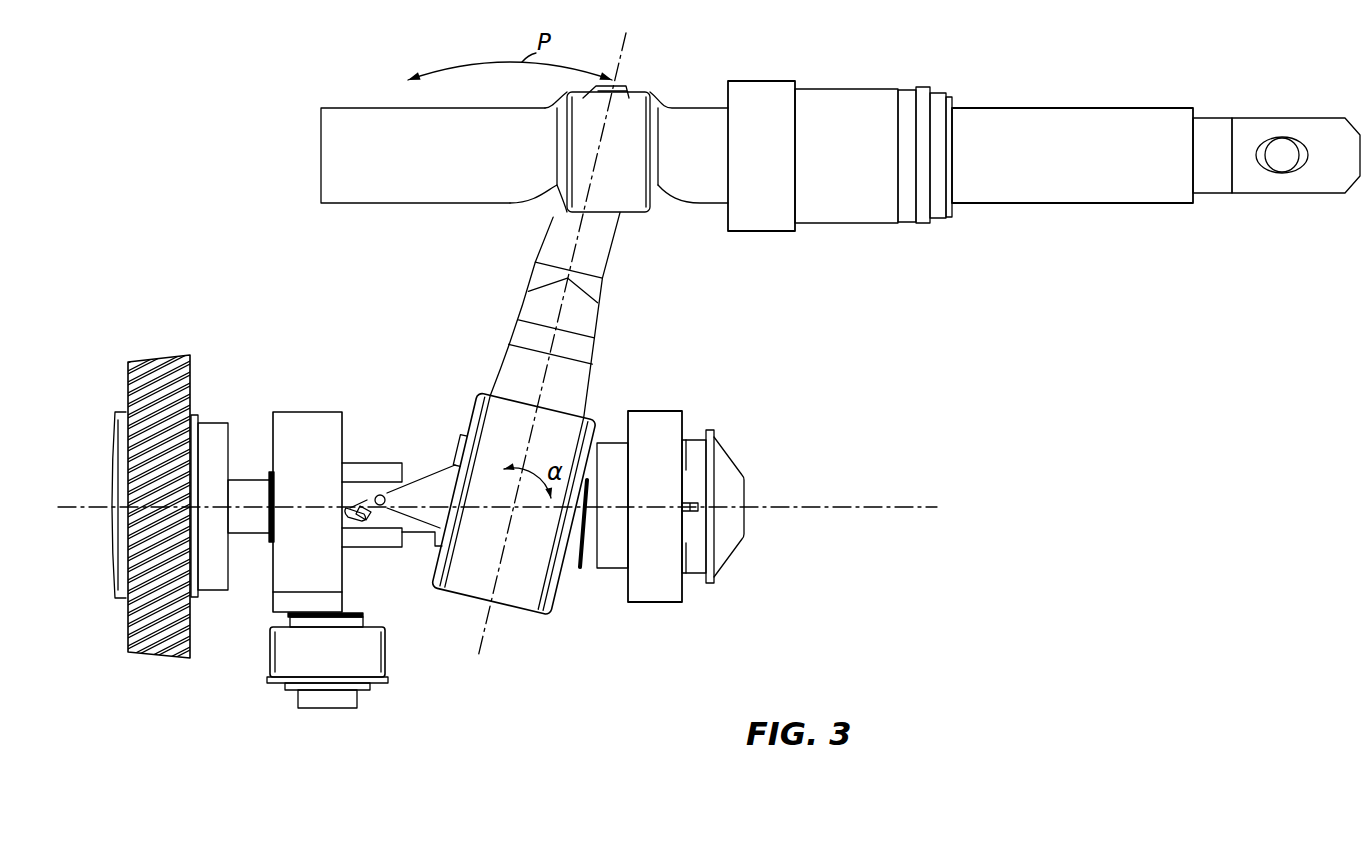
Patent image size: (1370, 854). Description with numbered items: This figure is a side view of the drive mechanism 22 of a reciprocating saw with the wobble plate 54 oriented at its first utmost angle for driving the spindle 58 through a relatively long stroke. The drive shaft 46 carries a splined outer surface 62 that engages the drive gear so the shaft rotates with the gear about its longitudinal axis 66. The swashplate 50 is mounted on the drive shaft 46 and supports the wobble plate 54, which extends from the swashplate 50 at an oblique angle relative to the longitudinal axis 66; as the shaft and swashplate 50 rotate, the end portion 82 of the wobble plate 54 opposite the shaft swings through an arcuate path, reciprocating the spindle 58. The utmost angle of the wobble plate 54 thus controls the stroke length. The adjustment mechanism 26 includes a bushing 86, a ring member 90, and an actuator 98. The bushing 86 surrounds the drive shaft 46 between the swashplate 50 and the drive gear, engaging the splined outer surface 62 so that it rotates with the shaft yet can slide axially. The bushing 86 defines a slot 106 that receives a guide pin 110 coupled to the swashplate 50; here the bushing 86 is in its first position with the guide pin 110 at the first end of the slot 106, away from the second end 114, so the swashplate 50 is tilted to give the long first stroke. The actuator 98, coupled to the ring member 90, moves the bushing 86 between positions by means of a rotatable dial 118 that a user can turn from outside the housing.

The drive mechanism 22 is at (180, 140).
The adjustment mechanism 26 is at (272, 723).
The drive shaft 46 is at (250, 487).
The swashplate 50 is at (455, 445).
The wobble plate 54 is at (600, 322).
The spindle 58 is at (342, 118).
The splined outer surface 62 is at (247, 523).
The longitudinal axis 66 is at (803, 507).
The end portion 82 is at (624, 92).
The bushing 86 is at (360, 463).
The ring member 90 is at (300, 412).
The actuator 98 is at (378, 662).
The slot 106 is at (367, 518).
The guide pin 110 is at (381, 495).
The second end 114 is at (345, 517).
The rotatable dial 118 is at (333, 703).